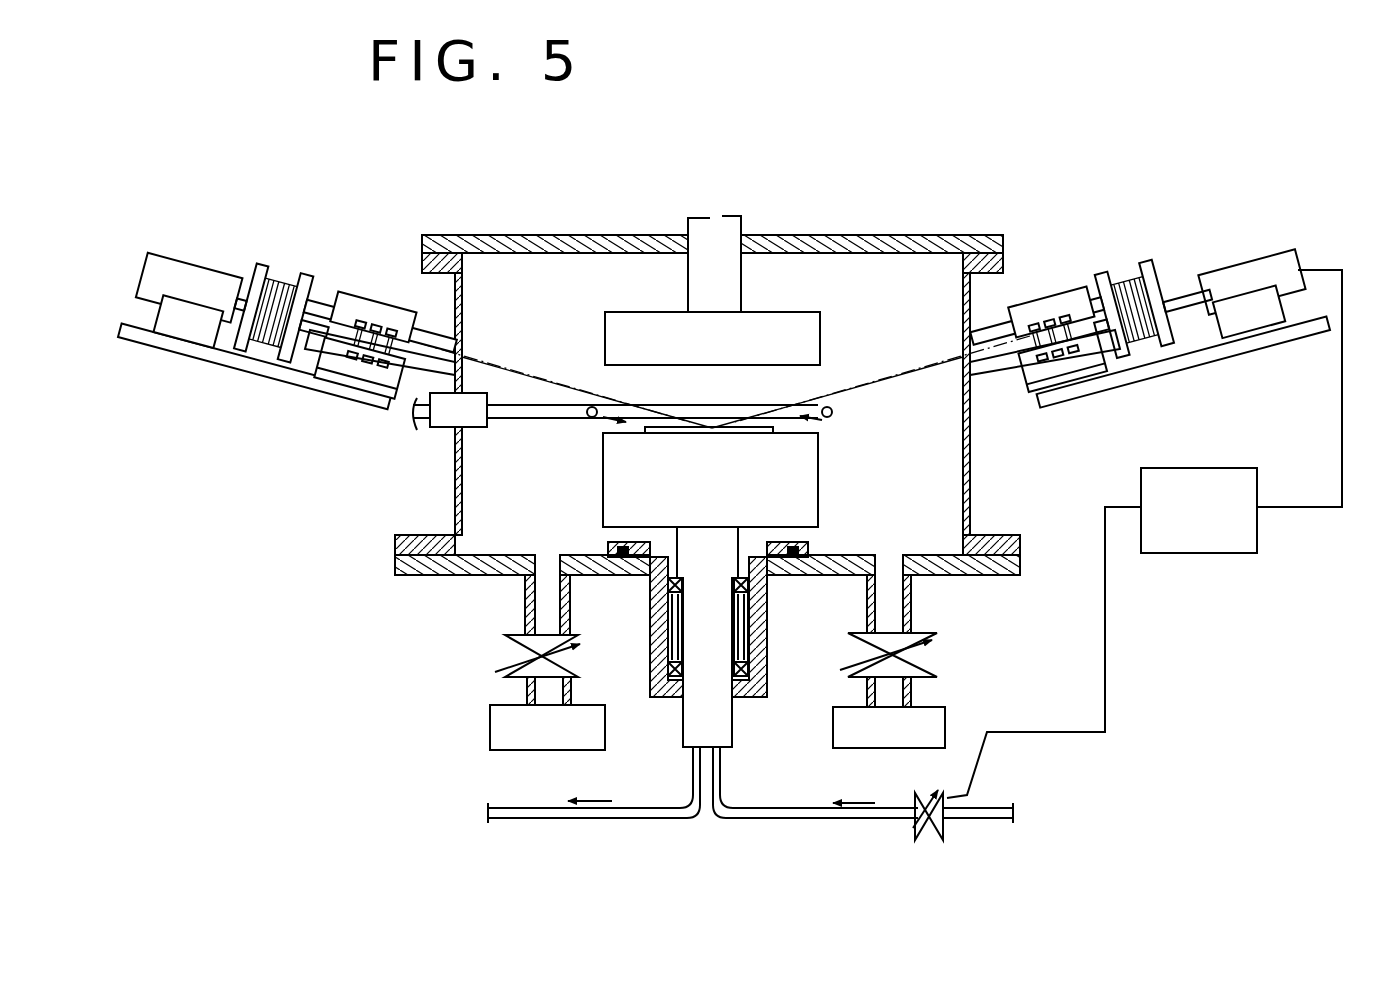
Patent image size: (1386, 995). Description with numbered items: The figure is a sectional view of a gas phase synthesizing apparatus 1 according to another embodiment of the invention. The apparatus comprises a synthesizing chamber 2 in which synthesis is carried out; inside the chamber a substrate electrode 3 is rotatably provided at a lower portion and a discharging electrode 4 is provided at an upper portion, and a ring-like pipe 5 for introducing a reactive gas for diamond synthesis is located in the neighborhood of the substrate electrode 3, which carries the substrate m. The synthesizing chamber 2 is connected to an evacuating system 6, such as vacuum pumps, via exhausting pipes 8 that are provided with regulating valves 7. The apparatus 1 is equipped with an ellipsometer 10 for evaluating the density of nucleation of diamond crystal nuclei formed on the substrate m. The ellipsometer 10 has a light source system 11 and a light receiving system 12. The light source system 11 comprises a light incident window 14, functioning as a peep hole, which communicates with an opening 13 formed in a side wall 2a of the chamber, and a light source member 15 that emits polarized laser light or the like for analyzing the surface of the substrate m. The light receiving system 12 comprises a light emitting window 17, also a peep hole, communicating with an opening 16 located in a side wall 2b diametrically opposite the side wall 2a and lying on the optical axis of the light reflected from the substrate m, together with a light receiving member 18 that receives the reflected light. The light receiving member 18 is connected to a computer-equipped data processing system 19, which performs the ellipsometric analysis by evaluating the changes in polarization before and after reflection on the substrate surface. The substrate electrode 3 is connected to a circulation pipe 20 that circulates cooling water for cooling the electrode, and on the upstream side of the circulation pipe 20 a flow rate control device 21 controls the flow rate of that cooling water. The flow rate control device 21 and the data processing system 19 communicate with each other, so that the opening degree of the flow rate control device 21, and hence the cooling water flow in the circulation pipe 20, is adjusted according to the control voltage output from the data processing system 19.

The gas phase synthesizing apparatus 1 is at (698, 370).
The synthesizing chamber 2 is at (698, 376).
The side wall 2a is at (455, 302).
The side wall 2b is at (972, 478).
The substrate electrode 3 is at (818, 484).
The discharging electrode 4 is at (820, 338).
The ring-like pipe 5 is at (588, 418).
The evacuating system 6 is at (505, 718).
The regulating valves 7 is at (508, 683).
The exhausting pipes 8 is at (525, 602).
The ellipsometer 10 is at (724, 273).
The light source system 11 is at (290, 293).
The light receiving system 12 is at (1147, 290).
The opening 13 is at (463, 355).
The light incident window 14 is at (228, 255).
The light source member 15 is at (185, 302).
The opening 16 is at (965, 360).
The light emitting window 17 is at (1134, 309).
The light receiving member 18 is at (1255, 294).
The data processing system 19 is at (1214, 526).
The circulation pipe 20 is at (593, 812).
The flow rate control device 21 is at (915, 825).
The substrate m is at (690, 433).